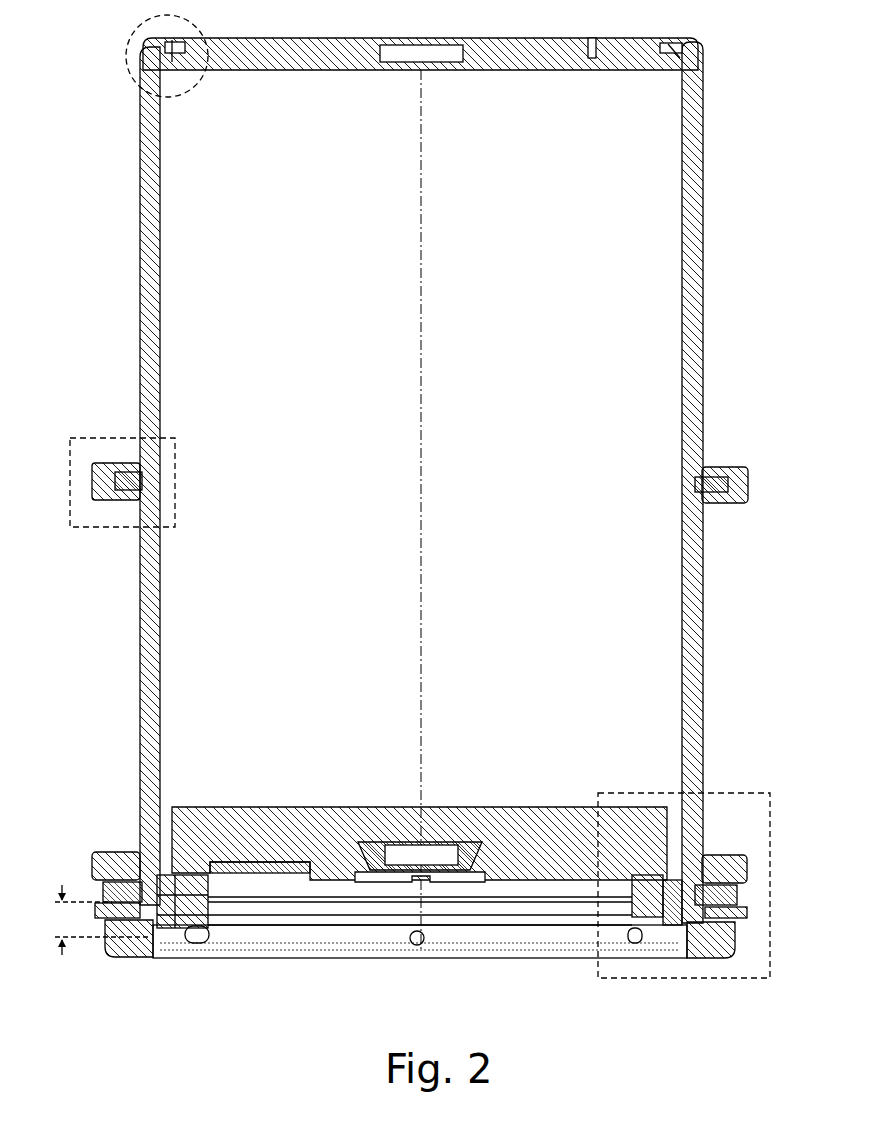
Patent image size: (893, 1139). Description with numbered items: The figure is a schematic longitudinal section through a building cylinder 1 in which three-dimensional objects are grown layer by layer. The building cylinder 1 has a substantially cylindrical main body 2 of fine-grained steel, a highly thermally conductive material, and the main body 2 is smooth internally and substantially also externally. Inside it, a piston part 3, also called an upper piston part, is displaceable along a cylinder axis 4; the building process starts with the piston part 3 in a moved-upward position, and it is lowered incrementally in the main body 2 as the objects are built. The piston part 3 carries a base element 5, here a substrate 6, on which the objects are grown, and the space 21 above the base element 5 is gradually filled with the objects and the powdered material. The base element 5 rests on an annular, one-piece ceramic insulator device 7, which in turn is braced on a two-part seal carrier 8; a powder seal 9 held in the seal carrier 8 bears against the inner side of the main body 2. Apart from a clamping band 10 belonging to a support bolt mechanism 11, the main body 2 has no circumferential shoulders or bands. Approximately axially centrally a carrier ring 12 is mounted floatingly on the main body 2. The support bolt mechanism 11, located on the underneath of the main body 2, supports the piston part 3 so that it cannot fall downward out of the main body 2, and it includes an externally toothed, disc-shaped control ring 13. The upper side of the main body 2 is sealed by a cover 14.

The building cylinder 1 is at (717, 108).
The main body 2 is at (140, 288).
The piston part 3 is at (315, 832).
The cylinder axis 4 is at (425, 452).
The base element 5 is at (436, 799).
The substrate 6 is at (515, 825).
The insulator device 7 is at (612, 882).
The seal carrier 8 is at (650, 885).
The powder seal 9 is at (665, 930).
The clamping band 10 is at (140, 852).
The support bolt mechanism 11 is at (100, 830).
The carrier ring 12 is at (717, 448).
The control ring 13 is at (745, 850).
The cover 14 is at (270, 71).
The space 21 is at (307, 538).